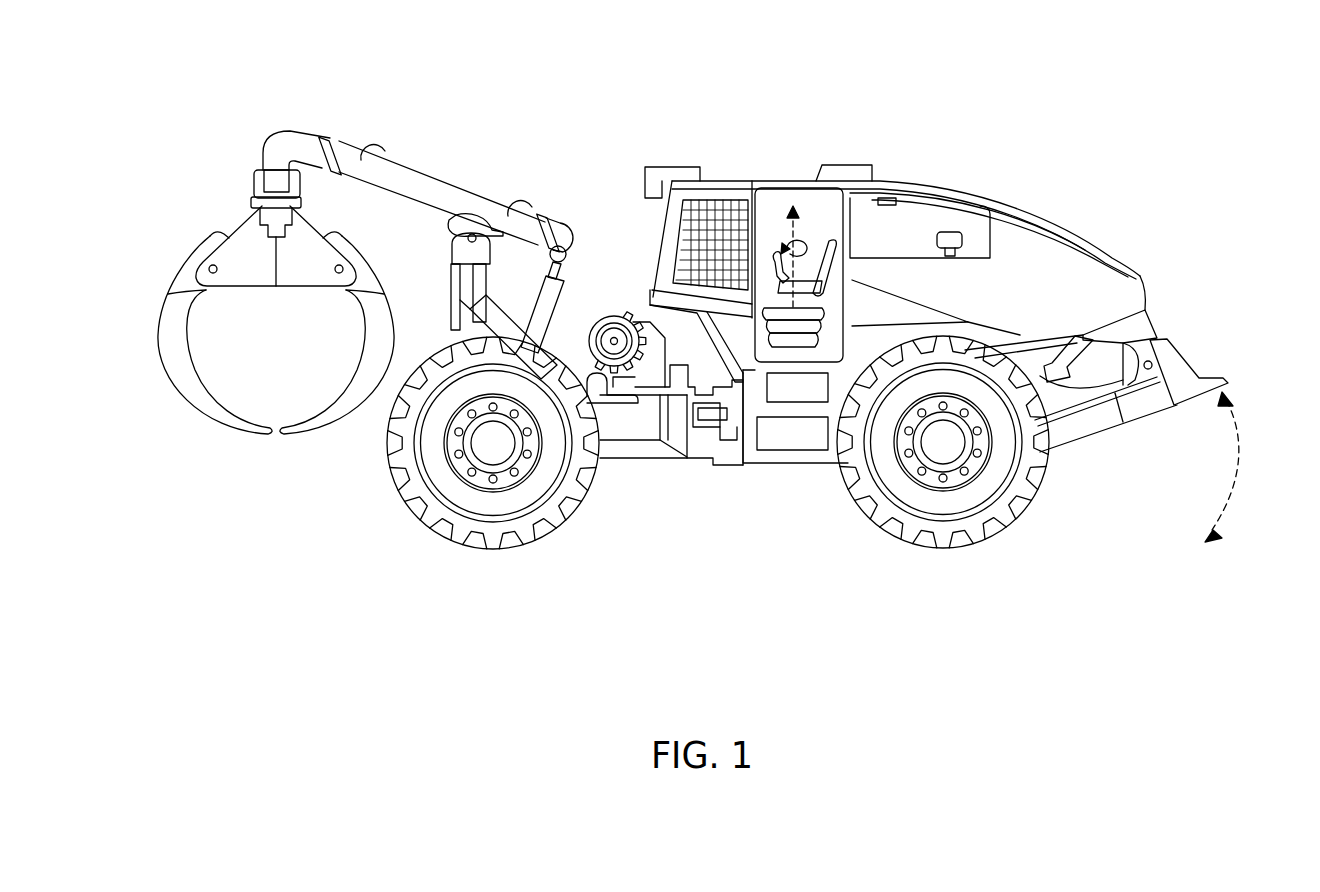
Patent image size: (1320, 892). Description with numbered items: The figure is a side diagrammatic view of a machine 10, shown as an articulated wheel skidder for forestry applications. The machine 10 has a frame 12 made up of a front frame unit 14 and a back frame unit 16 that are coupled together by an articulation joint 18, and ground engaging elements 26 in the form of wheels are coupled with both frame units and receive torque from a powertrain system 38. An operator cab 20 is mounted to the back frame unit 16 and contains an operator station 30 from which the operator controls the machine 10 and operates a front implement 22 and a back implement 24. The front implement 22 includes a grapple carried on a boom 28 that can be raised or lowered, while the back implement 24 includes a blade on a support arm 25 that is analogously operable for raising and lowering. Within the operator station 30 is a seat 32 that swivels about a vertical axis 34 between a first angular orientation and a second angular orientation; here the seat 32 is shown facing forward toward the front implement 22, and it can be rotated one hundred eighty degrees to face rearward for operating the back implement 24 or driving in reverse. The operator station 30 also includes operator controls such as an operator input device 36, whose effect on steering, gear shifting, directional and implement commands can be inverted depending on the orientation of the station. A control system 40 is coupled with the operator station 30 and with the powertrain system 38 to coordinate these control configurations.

The machine 10 is at (188, 170).
The frame 12 is at (1142, 274).
The front frame unit 14 is at (647, 465).
The back frame unit 16 is at (810, 470).
The articulation joint 18 is at (722, 476).
The operator cab 20 is at (700, 180).
The front implement 22 is at (201, 432).
The back implement 24 is at (1238, 368).
The support arm 25 is at (1094, 425).
The ground engaging elements 26 is at (422, 514).
The boom 28 is at (426, 172).
The operator station 30 is at (777, 220).
The seat 32 is at (830, 240).
The vertical axis 34 is at (798, 232).
The operator input device 36 is at (781, 280).
The powertrain system 38 is at (770, 452).
The control system 40 is at (770, 373).